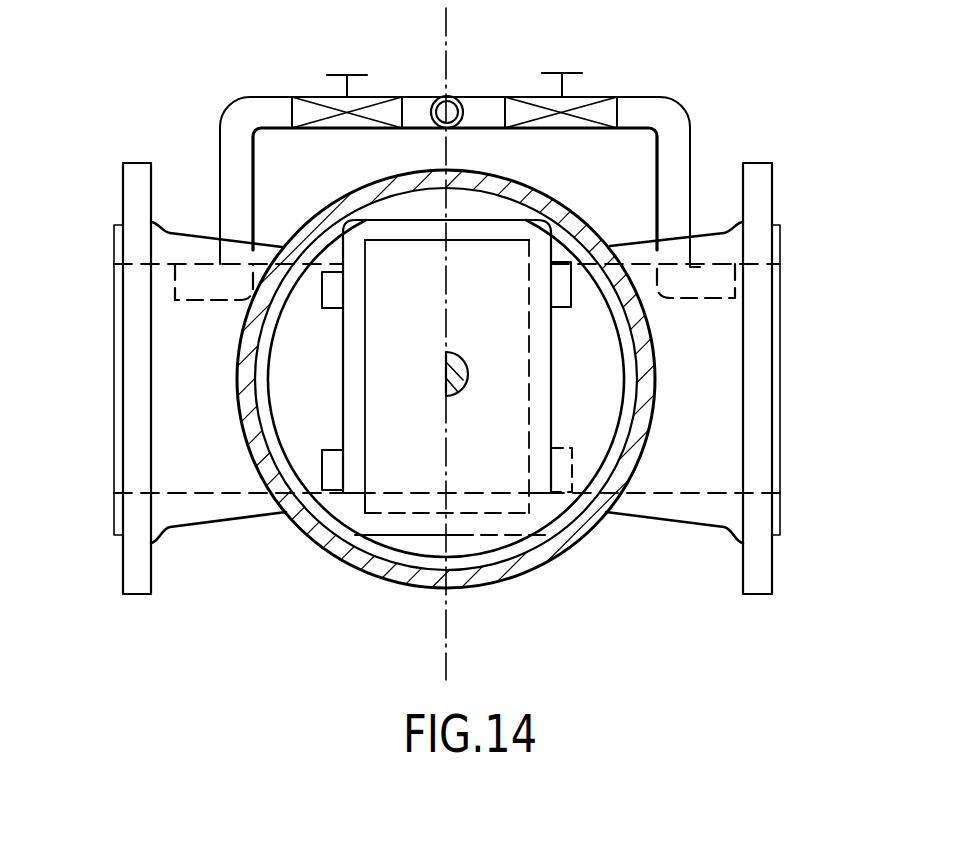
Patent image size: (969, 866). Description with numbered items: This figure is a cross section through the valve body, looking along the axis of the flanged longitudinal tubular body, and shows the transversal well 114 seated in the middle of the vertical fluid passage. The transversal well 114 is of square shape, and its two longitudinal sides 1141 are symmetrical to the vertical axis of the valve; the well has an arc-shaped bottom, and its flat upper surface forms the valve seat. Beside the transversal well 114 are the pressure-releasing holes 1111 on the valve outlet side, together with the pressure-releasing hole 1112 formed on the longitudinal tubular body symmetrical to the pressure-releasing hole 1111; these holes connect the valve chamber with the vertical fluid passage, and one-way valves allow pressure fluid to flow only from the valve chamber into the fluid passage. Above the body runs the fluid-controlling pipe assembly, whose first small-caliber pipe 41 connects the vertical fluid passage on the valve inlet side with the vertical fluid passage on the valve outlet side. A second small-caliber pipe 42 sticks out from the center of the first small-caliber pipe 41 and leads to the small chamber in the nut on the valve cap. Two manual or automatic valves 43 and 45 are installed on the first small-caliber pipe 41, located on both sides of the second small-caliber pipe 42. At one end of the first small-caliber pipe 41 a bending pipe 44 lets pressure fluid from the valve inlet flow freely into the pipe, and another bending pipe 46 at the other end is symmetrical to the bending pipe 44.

The first small-caliber pipe 41 is at (490, 112).
The second small-caliber pipe 42 is at (442, 100).
The manual or automatic valve 43 is at (313, 113).
The bending pipe 44 is at (747, 287).
The manual or automatic valve 45 is at (602, 107).
The bending pipe 46 is at (175, 296).
The transversal well 114 is at (412, 478).
The pressure-releasing hole 1111 is at (333, 293).
The pressure-releasing hole 1112 is at (562, 287).
The longitudinal side 1141 is at (405, 525).